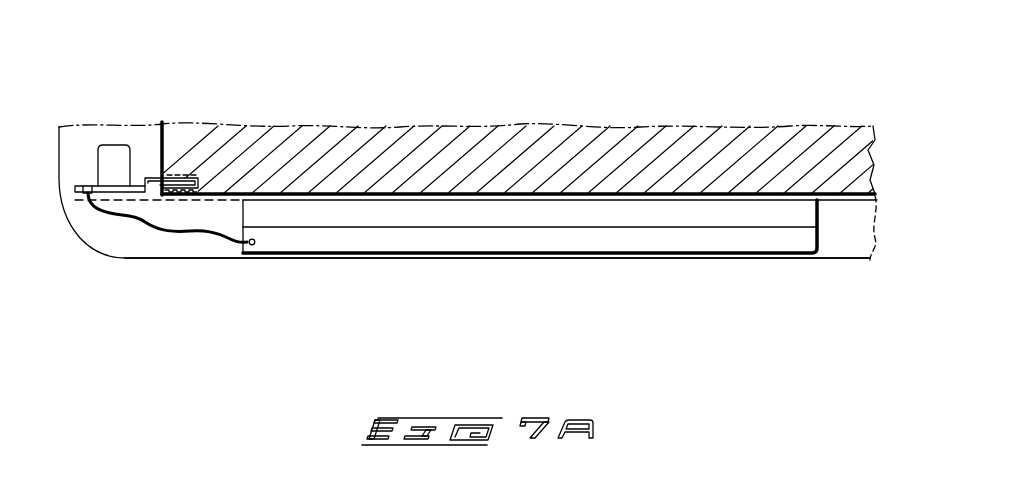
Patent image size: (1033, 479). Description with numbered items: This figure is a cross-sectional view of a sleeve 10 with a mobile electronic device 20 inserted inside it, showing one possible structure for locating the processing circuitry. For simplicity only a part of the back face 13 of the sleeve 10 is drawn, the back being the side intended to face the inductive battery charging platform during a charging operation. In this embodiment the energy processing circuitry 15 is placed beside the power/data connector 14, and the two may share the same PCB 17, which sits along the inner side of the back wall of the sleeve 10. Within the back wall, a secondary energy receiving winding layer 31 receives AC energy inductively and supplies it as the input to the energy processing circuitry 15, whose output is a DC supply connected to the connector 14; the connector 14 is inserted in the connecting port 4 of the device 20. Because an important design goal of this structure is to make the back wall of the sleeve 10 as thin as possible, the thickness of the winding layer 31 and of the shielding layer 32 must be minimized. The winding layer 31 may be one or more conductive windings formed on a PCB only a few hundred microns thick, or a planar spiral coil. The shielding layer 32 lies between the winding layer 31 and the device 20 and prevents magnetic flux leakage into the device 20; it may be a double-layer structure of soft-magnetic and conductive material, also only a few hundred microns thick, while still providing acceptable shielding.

The sleeve 10 is at (100, 256).
The back face 13 is at (388, 268).
The power/data connector 14 is at (179, 182).
The energy processing circuitry 15 is at (113, 142).
The PCB 17 is at (75, 192).
The mobile electronic device 20 is at (540, 120).
The connecting port 4 is at (204, 168).
The secondary energy receiving winding layer 31 is at (591, 234).
The shielding layer 32 is at (683, 212).